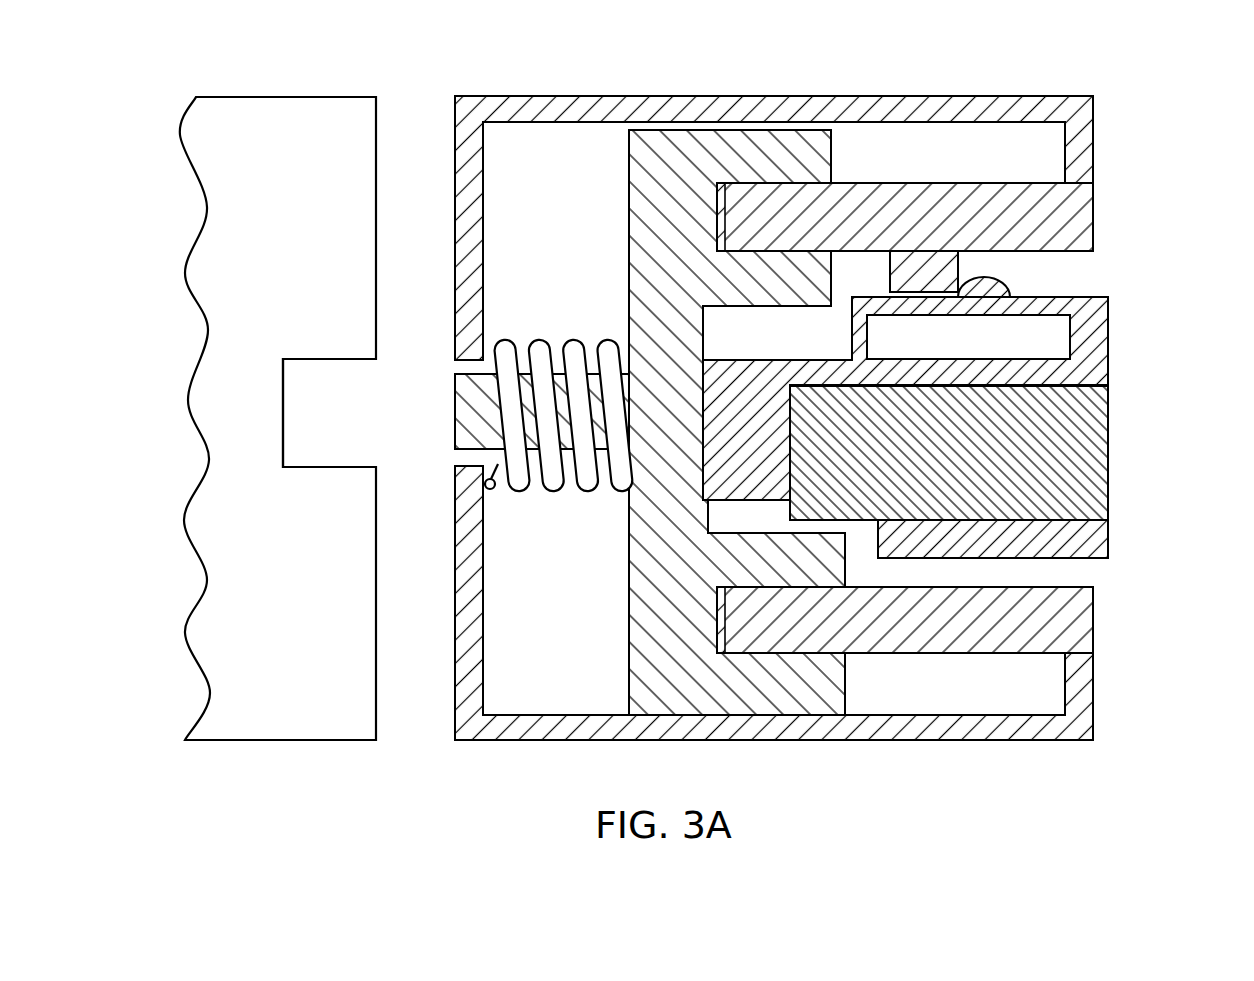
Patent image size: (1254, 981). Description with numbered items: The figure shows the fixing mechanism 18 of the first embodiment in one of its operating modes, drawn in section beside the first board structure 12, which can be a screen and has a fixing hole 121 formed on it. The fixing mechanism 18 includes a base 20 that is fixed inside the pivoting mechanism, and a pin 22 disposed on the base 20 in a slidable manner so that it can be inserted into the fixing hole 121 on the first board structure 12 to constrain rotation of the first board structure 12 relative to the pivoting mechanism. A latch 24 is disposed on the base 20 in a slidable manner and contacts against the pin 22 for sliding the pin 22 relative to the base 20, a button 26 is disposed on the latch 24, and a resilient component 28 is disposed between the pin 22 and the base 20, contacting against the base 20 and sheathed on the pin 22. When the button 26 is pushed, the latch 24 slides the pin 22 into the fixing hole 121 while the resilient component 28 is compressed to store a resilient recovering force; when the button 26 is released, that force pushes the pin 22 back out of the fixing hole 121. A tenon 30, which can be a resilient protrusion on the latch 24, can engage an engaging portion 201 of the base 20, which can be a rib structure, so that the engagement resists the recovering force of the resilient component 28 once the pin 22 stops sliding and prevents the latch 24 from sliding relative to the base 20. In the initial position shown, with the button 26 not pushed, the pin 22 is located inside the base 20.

The first board structure 12 is at (240, 232).
The fixing hole 121 is at (347, 410).
The fixing mechanism 18 is at (819, 395).
The base 20 is at (1077, 633).
The engaging portion 201 is at (925, 270).
The pin 22 is at (653, 668).
The latch 24 is at (1097, 361).
The button 26 is at (1098, 470).
The resilient component 28 is at (555, 484).
The tenon 30 is at (987, 291).